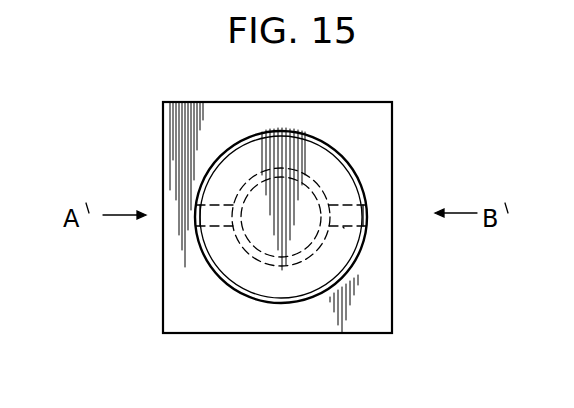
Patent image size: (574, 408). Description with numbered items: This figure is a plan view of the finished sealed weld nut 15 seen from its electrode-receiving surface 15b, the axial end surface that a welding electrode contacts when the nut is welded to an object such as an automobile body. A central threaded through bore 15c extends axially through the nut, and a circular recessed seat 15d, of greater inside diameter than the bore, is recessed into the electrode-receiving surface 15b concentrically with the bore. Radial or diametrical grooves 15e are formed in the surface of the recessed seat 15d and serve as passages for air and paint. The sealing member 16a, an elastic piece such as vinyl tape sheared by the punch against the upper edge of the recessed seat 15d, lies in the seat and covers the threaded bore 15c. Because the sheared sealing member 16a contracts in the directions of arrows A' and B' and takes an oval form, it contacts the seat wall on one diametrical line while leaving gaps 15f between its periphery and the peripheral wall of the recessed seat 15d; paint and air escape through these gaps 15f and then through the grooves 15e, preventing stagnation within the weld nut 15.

The sealed weld nut 15 is at (452, 157).
The electrode-receiving surface 15b is at (388, 118).
The threaded through bore 15c is at (273, 262).
The recessed seat 15d is at (366, 200).
The grooves 15e is at (343, 227).
The gaps 15f is at (360, 241).
The sealing member 16a is at (342, 185).